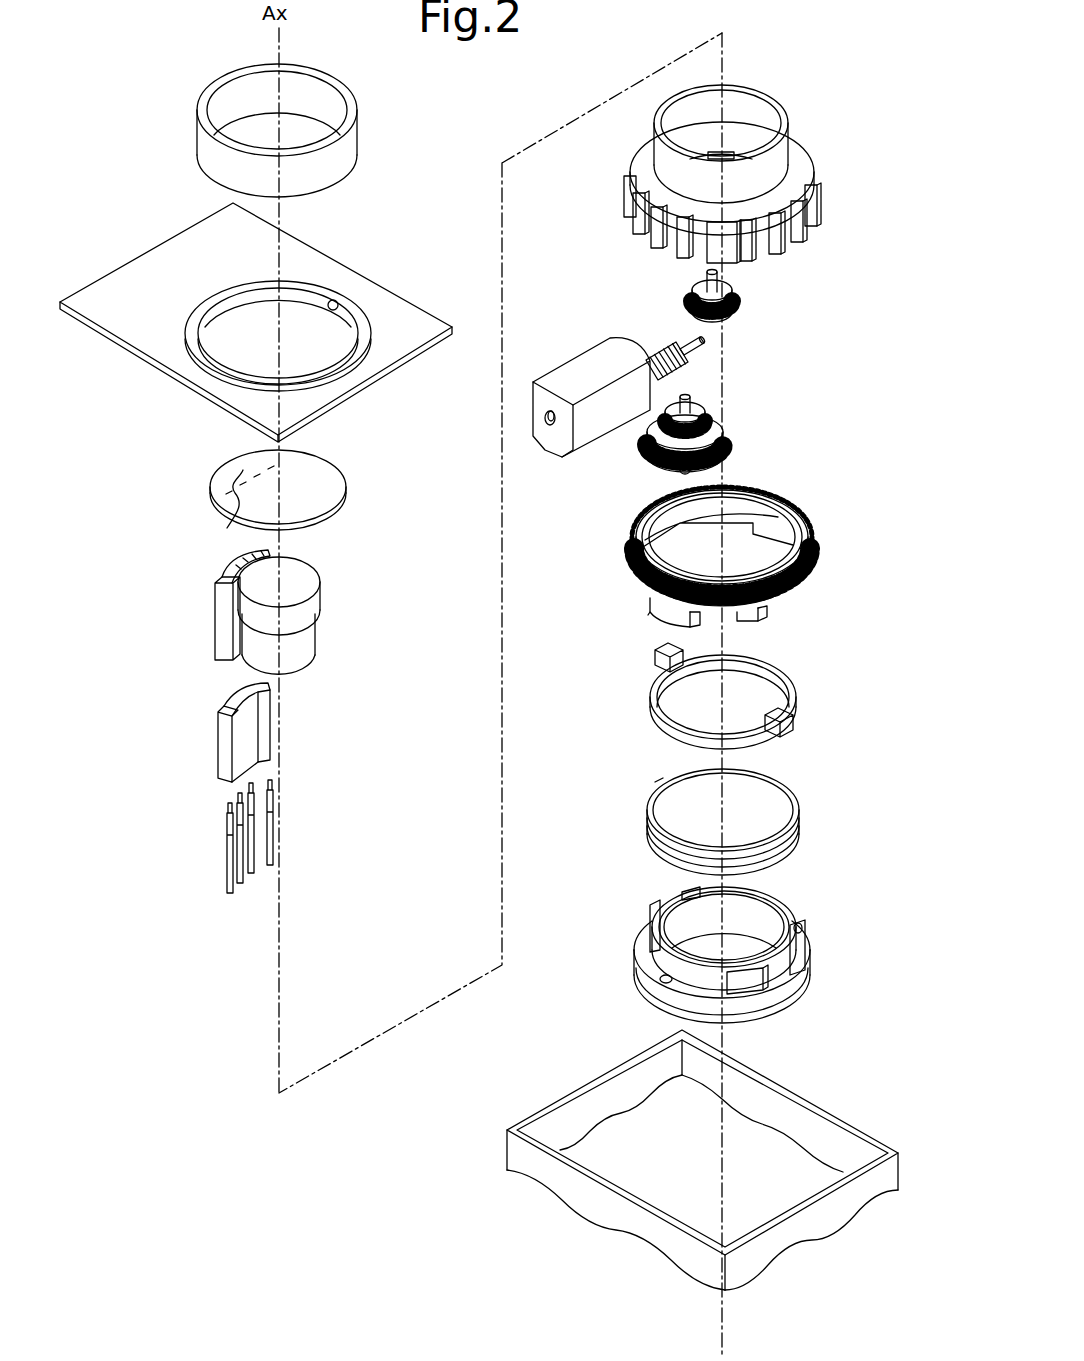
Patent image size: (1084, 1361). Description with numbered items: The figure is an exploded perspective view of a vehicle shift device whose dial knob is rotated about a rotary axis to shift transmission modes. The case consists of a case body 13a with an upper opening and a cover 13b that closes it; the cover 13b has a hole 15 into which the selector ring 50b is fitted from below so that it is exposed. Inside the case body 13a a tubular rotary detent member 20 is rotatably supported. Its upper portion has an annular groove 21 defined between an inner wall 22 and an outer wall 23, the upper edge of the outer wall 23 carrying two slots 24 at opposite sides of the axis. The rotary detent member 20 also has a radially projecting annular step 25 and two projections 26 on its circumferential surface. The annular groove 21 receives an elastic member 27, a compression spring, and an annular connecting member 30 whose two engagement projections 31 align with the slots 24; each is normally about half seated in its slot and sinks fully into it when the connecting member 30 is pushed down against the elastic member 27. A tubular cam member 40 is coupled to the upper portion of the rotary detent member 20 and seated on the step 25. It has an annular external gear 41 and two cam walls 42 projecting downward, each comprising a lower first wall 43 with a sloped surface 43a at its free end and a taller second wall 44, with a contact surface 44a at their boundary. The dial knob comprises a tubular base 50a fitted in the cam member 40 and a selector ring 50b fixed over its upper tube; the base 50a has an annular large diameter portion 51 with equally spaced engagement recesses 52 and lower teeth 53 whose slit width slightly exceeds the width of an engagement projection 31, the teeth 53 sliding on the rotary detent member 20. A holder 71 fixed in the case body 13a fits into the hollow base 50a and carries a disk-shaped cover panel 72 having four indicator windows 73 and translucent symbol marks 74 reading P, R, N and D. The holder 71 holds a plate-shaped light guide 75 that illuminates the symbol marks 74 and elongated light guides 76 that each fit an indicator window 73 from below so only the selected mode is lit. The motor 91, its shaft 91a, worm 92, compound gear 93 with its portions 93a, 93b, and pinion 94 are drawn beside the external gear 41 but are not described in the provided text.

The case body 13a is at (806, 1093).
The cover 13b is at (150, 262).
The hole 15 is at (340, 300).
The rotary detent member 20 is at (712, 956).
The annular groove 21 is at (810, 946).
The inner wall 22 is at (760, 900).
The outer wall 23 is at (806, 926).
The slots 24 is at (655, 912).
The annular step 25 is at (668, 983).
The projections 26 is at (690, 890).
The elastic member 27 is at (800, 822).
The connecting member 30 is at (734, 703).
The engagement projections 31 is at (658, 668).
The cam member 40 is at (734, 560).
The external gear 41 is at (815, 548).
The cam walls 42 is at (653, 613).
The first wall 43 is at (743, 618).
The sloped surface 43a is at (762, 611).
The second wall 44 is at (650, 605).
The contact surface 44a is at (697, 627).
The base 50a is at (732, 166).
The selector ring 50b is at (358, 122).
The large diameter portion 51 is at (814, 170).
The engagement recesses 52 is at (640, 213).
The teeth 53 is at (786, 243).
The holder 71 is at (333, 597).
The cover panel 72 is at (303, 488).
The indicator windows 73 is at (224, 516).
The symbol marks 74 is at (255, 442).
The light guide 75 is at (218, 727).
The light guides 76 is at (245, 880).
The motor 91 is at (622, 372).
The motor shaft 91a is at (700, 342).
The worm gear 92 is at (652, 355).
The compound gear 93 is at (749, 430).
The large gear 93a is at (725, 440).
The small gear 93b is at (715, 410).
The pinion gear 94 is at (735, 300).